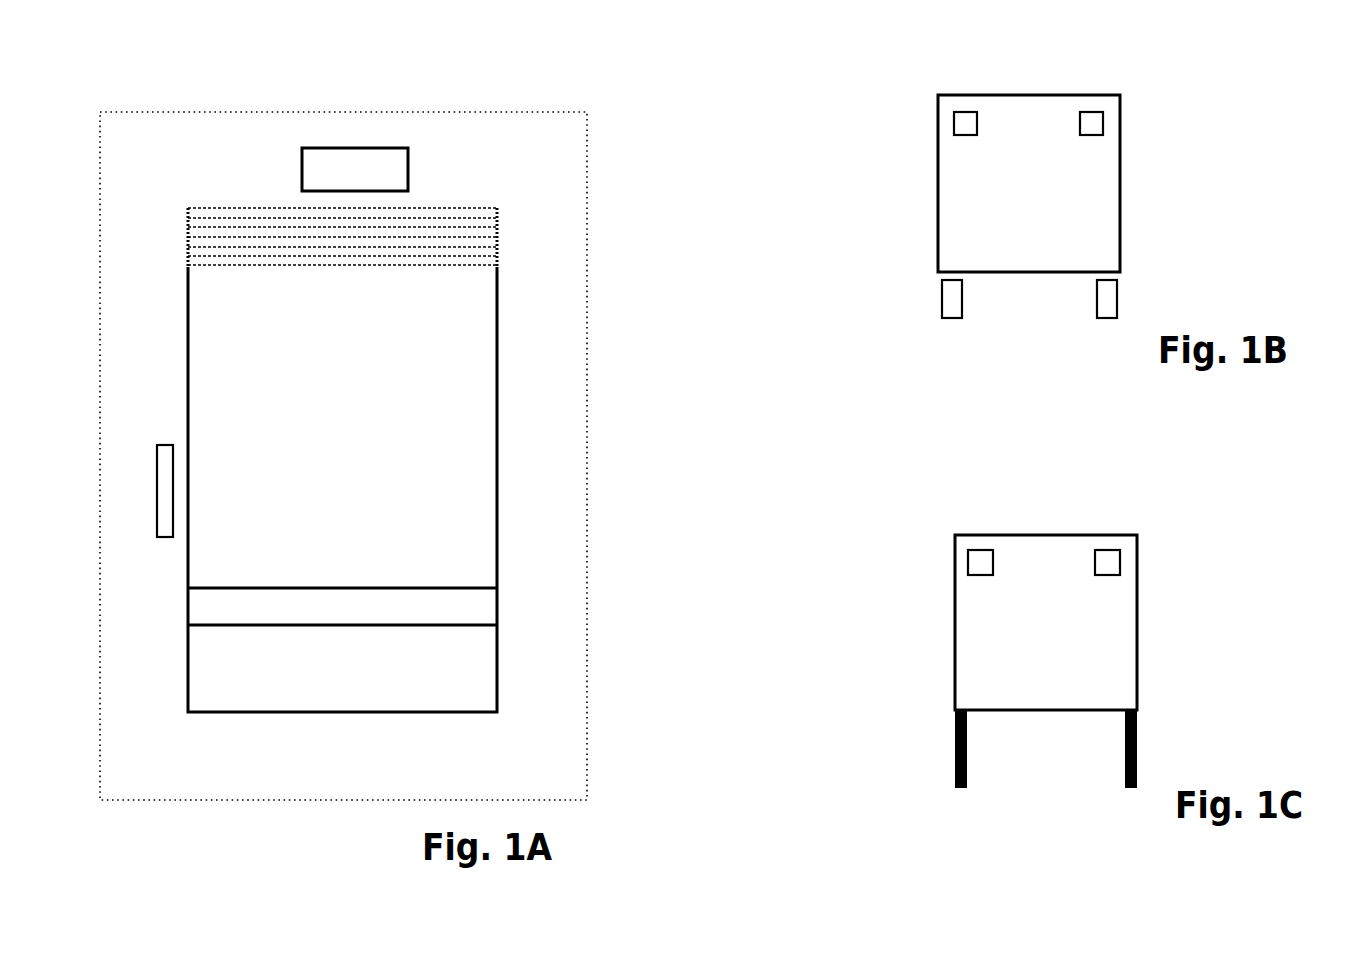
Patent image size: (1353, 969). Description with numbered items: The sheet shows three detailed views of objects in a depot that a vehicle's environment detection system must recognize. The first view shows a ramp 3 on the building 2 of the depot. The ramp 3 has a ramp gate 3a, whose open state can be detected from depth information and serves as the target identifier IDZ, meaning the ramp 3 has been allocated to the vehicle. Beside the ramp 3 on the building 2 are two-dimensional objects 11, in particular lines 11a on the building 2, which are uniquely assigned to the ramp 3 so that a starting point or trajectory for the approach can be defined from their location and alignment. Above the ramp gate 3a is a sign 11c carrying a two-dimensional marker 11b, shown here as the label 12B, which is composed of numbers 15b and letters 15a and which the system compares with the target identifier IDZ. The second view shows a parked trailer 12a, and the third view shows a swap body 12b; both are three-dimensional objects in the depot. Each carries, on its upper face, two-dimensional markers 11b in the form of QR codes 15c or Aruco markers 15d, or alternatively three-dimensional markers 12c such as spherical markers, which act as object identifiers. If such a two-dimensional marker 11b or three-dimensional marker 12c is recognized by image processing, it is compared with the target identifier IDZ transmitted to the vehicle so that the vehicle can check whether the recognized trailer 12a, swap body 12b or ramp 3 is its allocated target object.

In FIG. 1A, the building 2 is at (587, 323).
In FIG. 1A, the ramp 3 is at (470, 498).
In FIG. 1A, the ramp gate 3a is at (339, 256).
In FIG. 1A, the two-dimensional object 11 is at (260, 500).
In FIG. 1A, the lines 11a is at (175, 507).
In FIG. 1B, the 2D marker 11b is at (1066, 80).
In FIG. 1C, the 2D marker 11b is at (1081, 521).
In FIG. 1A, the signs 11c is at (395, 148).
In FIG. 1A, the display unit 12B is at (377, 121).
In FIG. 1B, the parked trailer 12a is at (1121, 147).
In FIG. 1C, the swap body 12b is at (1138, 585).
In FIG. 1B, the 3D marker 12c is at (1090, 112).
In FIG. 1C, the 3D marker 12c is at (1103, 550).
In FIG. 1A, the letters 15a is at (375, 148).
In FIG. 1A, the numbers 15b is at (333, 160).
In FIG. 1B, the QR codes 15c is at (1066, 80).
In FIG. 1C, the QR codes 15c is at (1081, 521).
In FIG. 1B, the Aruco markers 15d is at (1066, 80).
In FIG. 1C, the Aruco markers 15d is at (1081, 521).
In FIG. 1A, the target identifier IDZ is at (412, 172).